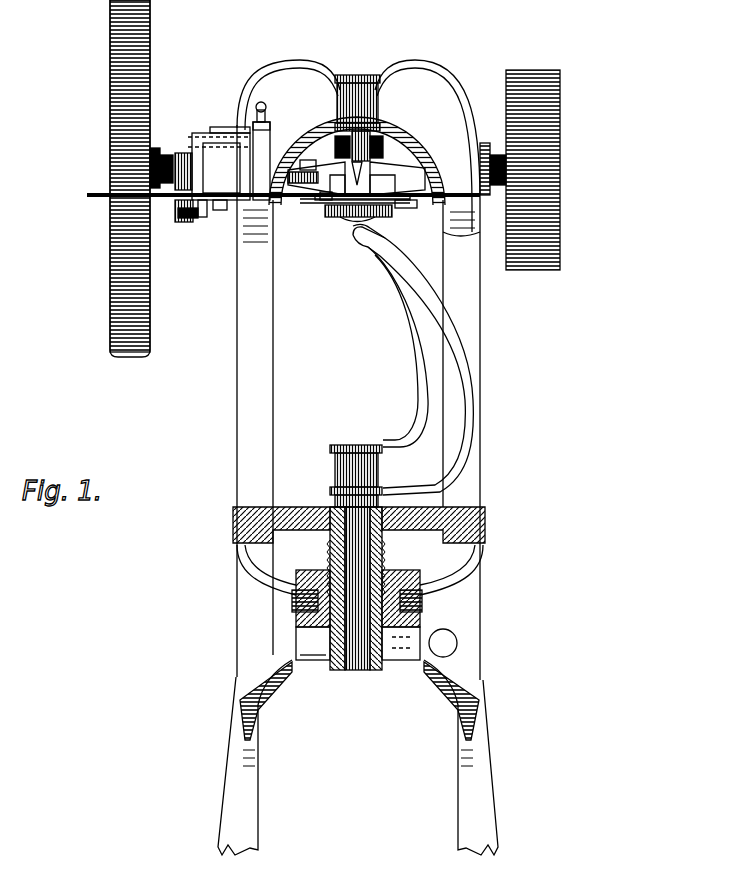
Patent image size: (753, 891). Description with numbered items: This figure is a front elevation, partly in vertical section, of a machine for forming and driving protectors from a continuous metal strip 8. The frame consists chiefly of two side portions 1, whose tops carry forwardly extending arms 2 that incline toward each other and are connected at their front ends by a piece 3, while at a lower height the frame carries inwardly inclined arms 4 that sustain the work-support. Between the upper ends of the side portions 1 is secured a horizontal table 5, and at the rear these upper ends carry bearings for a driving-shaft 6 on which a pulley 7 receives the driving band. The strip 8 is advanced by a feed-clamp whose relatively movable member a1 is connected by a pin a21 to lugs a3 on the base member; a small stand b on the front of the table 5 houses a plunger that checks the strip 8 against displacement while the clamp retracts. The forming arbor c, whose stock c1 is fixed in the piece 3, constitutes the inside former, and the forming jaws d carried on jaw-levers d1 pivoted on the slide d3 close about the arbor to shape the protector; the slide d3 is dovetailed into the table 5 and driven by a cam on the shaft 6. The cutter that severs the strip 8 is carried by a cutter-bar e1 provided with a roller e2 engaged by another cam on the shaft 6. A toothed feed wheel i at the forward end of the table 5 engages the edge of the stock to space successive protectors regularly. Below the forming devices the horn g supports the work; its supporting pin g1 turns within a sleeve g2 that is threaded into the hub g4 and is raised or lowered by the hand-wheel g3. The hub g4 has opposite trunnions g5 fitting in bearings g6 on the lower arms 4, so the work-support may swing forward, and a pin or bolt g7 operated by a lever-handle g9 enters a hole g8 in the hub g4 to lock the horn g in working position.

The side portions 1 is at (235, 392).
The forwardly extending arms 2 is at (288, 78).
The piece 3 is at (372, 72).
The forwardly extending arms 4 is at (290, 620).
The horizontal table 5 is at (470, 236).
The driving-shaft 6 is at (496, 150).
The pulley 7 is at (562, 265).
The strip 8 is at (266, 190).
The pin a21 is at (185, 135).
The lugs or ears a3 is at (250, 131).
The relatively movable member a1 is at (225, 210).
The stand b is at (243, 230).
The forming arbor c is at (345, 218).
The stock c1 is at (355, 74).
The forming jaws d is at (385, 238).
The jaw-levers d1 is at (450, 122).
The slide d3 is at (420, 205).
The cutter-bar e1 is at (322, 170).
The roller e2 is at (325, 205).
The feed wheel i is at (320, 225).
The horn g is at (462, 393).
The supporting pin g1 is at (356, 670).
The sleeve g2 is at (336, 668).
The hand-wheel g3 is at (232, 527).
The hub g4 is at (290, 680).
The trunnions g5 is at (510, 586).
The bearings g6 is at (540, 652).
The pin or bolt g7 is at (430, 680).
The hole g8 is at (378, 668).
The lever-handle g9 is at (458, 648).